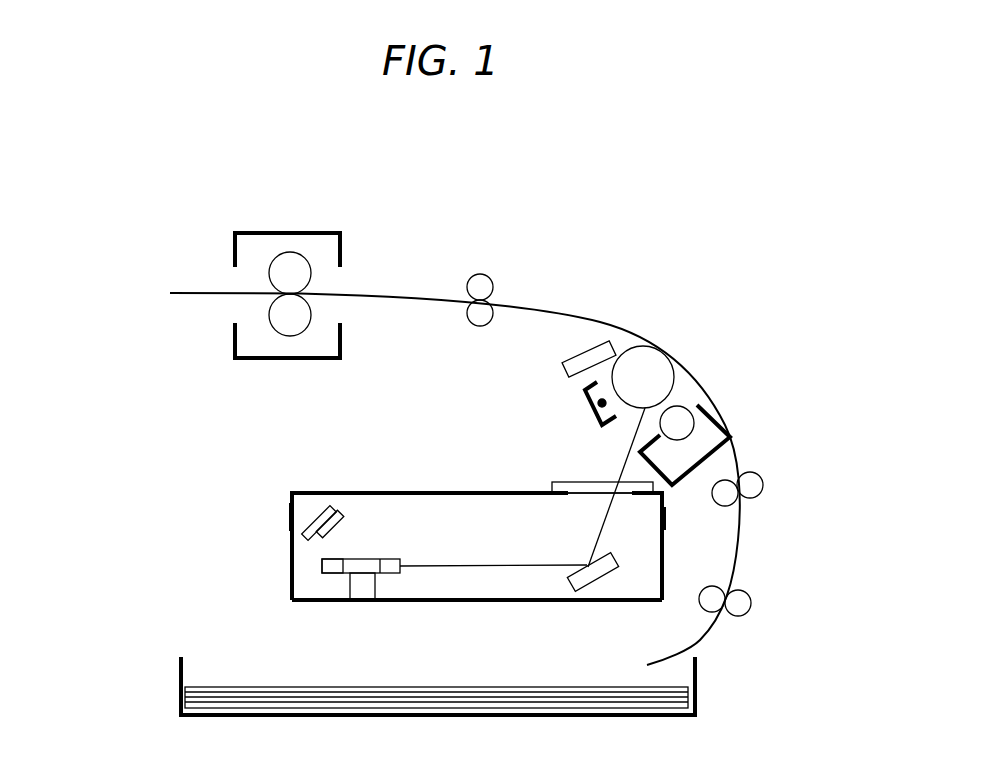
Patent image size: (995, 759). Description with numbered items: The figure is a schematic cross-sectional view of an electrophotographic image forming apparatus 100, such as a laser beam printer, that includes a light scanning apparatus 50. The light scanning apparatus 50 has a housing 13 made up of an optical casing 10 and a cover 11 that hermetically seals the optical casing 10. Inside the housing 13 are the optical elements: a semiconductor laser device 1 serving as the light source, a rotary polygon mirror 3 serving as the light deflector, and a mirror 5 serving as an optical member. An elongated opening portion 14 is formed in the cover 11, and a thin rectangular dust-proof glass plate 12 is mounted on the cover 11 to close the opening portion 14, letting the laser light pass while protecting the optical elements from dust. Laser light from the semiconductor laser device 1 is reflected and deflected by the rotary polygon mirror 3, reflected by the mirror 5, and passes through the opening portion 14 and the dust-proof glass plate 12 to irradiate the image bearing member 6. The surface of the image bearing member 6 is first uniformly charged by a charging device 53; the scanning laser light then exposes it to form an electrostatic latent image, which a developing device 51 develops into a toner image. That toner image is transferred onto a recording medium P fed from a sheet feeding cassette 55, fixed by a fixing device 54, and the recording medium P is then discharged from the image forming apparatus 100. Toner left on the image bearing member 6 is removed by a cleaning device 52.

The image forming apparatus 100 is at (767, 247).
The fixing device 54 is at (320, 255).
The cleaning device 52 is at (603, 353).
The image bearing member 6 is at (647, 372).
The charging device 53 is at (584, 391).
The developing device 51 is at (703, 437).
The optical casing 10 is at (293, 545).
The housing 13 is at (410, 600).
The light scanning apparatus 50 is at (551, 600).
The opening portion 14 is at (623, 498).
The dust-proof glass plate 12 is at (552, 486).
The cover 11 is at (323, 492).
The semiconductor laser device 1 is at (362, 560).
The rotary polygon mirror 3 is at (333, 567).
The mirror 5 is at (620, 562).
The sheet feeding cassette 55 is at (178, 667).
The recording medium P is at (244, 695).